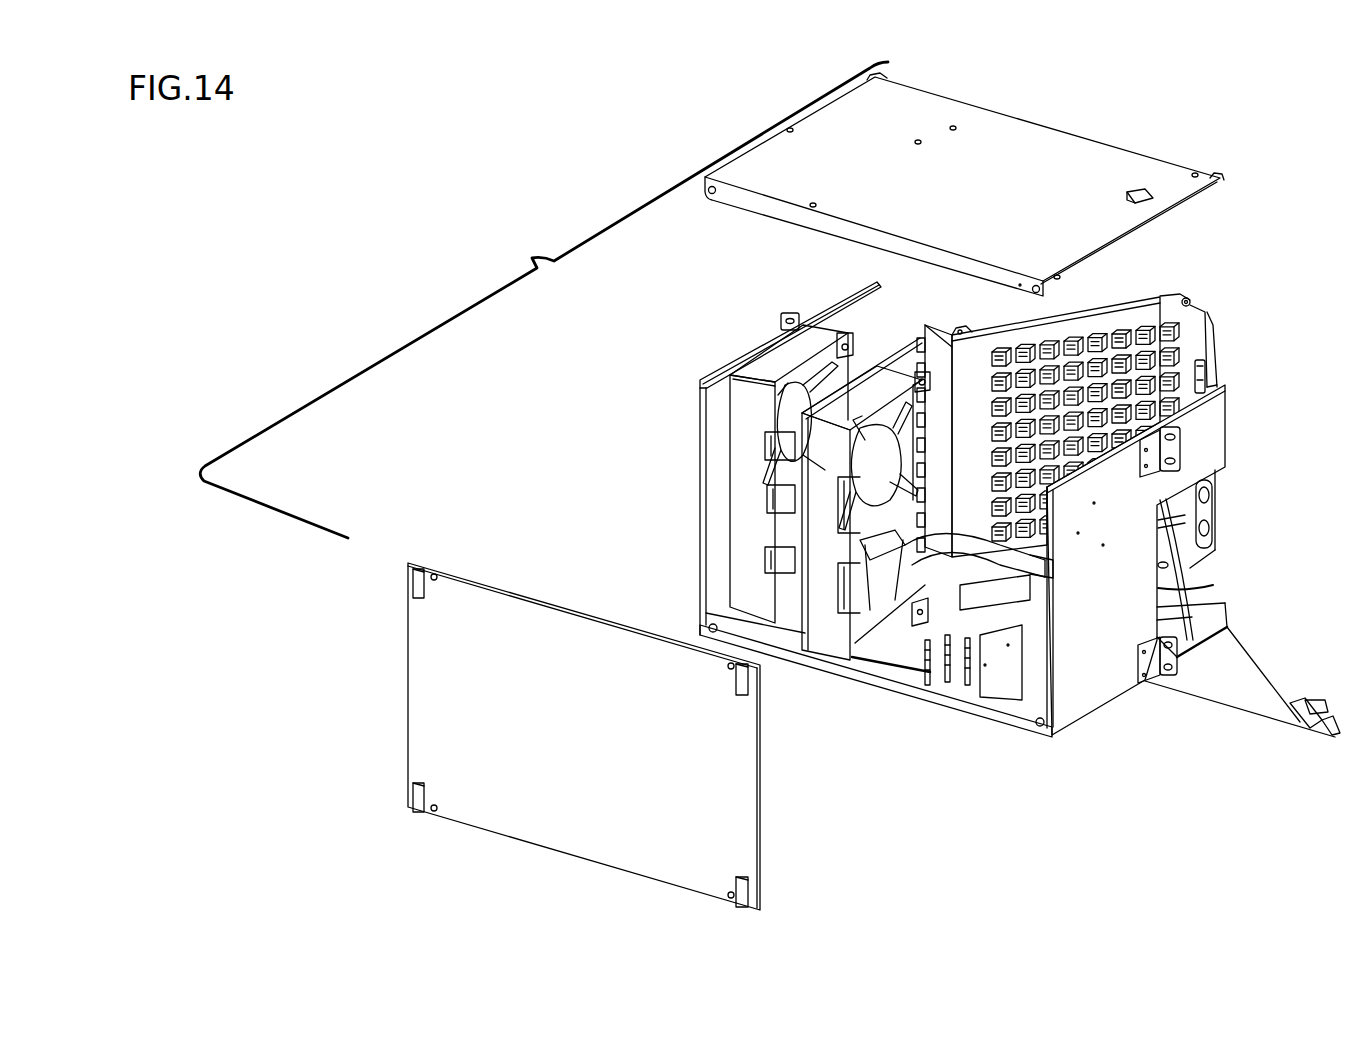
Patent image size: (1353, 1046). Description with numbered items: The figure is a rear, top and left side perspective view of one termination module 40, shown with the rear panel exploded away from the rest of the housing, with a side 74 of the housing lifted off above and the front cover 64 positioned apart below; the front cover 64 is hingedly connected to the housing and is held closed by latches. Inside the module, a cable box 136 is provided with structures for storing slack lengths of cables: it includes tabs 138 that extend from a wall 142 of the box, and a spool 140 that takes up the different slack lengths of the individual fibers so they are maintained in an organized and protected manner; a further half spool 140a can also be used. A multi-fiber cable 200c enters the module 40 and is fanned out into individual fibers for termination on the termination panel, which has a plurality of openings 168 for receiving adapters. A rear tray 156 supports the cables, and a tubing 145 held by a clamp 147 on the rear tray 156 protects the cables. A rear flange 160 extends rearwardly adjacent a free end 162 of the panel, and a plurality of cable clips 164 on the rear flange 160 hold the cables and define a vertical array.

The termination module 40 is at (544, 300).
The second side 74 is at (983, 200).
The front cover 64 is at (605, 752).
The cable box 136 is at (766, 355).
The spool 140 is at (870, 497).
The half spool 140a is at (786, 545).
The tabs 138 is at (865, 447).
The wall 142 is at (920, 622).
The tubing 145 is at (972, 585).
The clamp 147 is at (1040, 572).
The rear tray 156 is at (1213, 585).
The rear flange 160 is at (1207, 312).
The free end 162 is at (1188, 300).
The cable clips 164 is at (1200, 367).
The openings 168 is at (1123, 330).
The cable 200c is at (1023, 680).